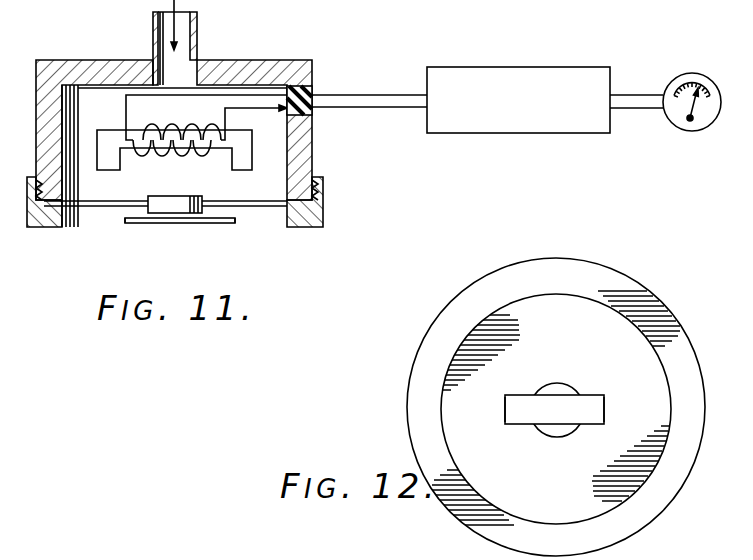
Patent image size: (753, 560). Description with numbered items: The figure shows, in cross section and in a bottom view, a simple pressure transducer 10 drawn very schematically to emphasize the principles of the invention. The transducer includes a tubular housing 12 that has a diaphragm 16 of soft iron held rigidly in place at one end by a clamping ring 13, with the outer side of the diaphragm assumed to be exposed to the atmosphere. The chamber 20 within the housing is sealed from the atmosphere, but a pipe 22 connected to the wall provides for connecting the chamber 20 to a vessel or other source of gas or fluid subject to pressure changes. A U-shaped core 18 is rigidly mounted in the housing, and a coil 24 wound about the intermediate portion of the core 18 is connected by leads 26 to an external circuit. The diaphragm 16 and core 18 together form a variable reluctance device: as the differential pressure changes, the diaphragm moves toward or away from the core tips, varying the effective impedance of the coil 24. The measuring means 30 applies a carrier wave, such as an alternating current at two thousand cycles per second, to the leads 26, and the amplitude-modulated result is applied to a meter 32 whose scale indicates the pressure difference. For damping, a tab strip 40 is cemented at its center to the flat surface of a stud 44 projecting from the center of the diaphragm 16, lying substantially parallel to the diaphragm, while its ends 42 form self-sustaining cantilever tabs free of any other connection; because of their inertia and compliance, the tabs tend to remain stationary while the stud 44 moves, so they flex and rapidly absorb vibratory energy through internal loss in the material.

In FIG. 11, the pressure transducer 10 is at (200, 120).
In FIG. 12, the pressure transducer 10 is at (658, 519).
In FIG. 11, the tubular housing 12 is at (303, 151).
In FIG. 11, the clamping ring 13 is at (322, 213).
In FIG. 12, the clamping ring 13 is at (621, 287).
In FIG. 11, the diaphragm 16 is at (240, 200).
In FIG. 12, the diaphragm 16 is at (556, 408).
In FIG. 11, the U-shaped core 18 is at (312, 133).
In FIG. 11, the chamber 20 is at (182, 145).
In FIG. 11, the pipe 22 is at (199, 22).
In FIG. 11, the coil 24 is at (162, 128).
In FIG. 11, the leads 26 is at (389, 110).
In FIG. 11, the measuring means 30 is at (528, 67).
In FIG. 11, the meter 32 is at (680, 73).
In FIG. 11, the tab strip 40 is at (188, 228).
In FIG. 12, the tab strip 40 is at (565, 427).
In FIG. 11, the ends 42 is at (122, 224).
In FIG. 12, the ends 42 is at (505, 412).
In FIG. 11, the stud 44 is at (163, 207).
In FIG. 12, the stud 44 is at (551, 388).